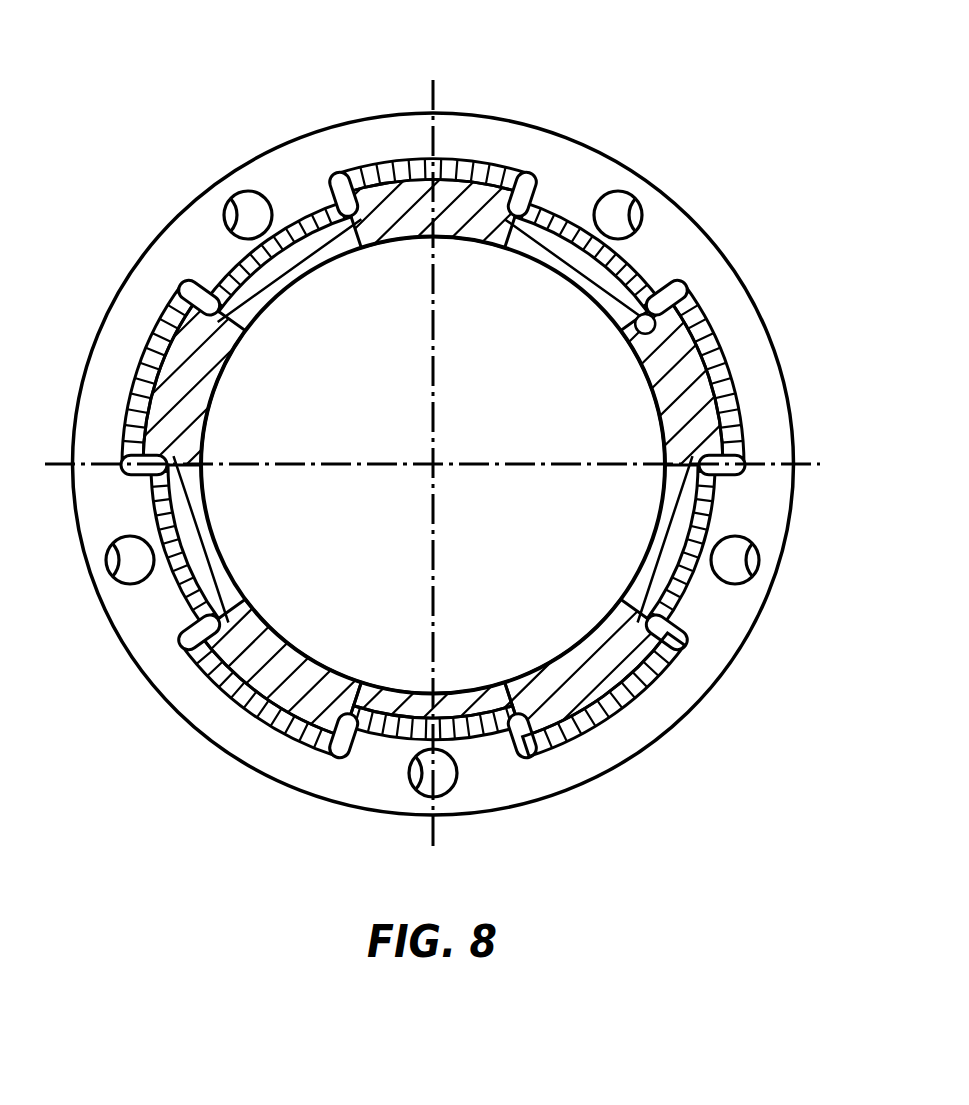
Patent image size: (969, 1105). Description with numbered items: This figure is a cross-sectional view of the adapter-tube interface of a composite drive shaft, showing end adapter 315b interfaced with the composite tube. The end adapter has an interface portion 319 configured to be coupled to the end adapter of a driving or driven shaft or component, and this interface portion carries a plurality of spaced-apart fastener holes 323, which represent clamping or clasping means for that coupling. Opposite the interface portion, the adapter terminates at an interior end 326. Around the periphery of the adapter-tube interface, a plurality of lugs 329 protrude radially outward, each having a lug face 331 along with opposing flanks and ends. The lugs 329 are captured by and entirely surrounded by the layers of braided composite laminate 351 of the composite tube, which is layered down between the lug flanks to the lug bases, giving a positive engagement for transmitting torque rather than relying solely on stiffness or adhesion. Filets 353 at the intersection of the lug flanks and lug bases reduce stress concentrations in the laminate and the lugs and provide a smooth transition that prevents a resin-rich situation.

The end adapter 315b is at (610, 92).
The interface portion 319 is at (160, 700).
The fastener holes 323 is at (228, 205).
The interior end 326 is at (215, 540).
The lugs 329 is at (458, 208).
The lug face 331 is at (398, 160).
The composite laminate 351 is at (643, 667).
The filets 353 is at (636, 352).